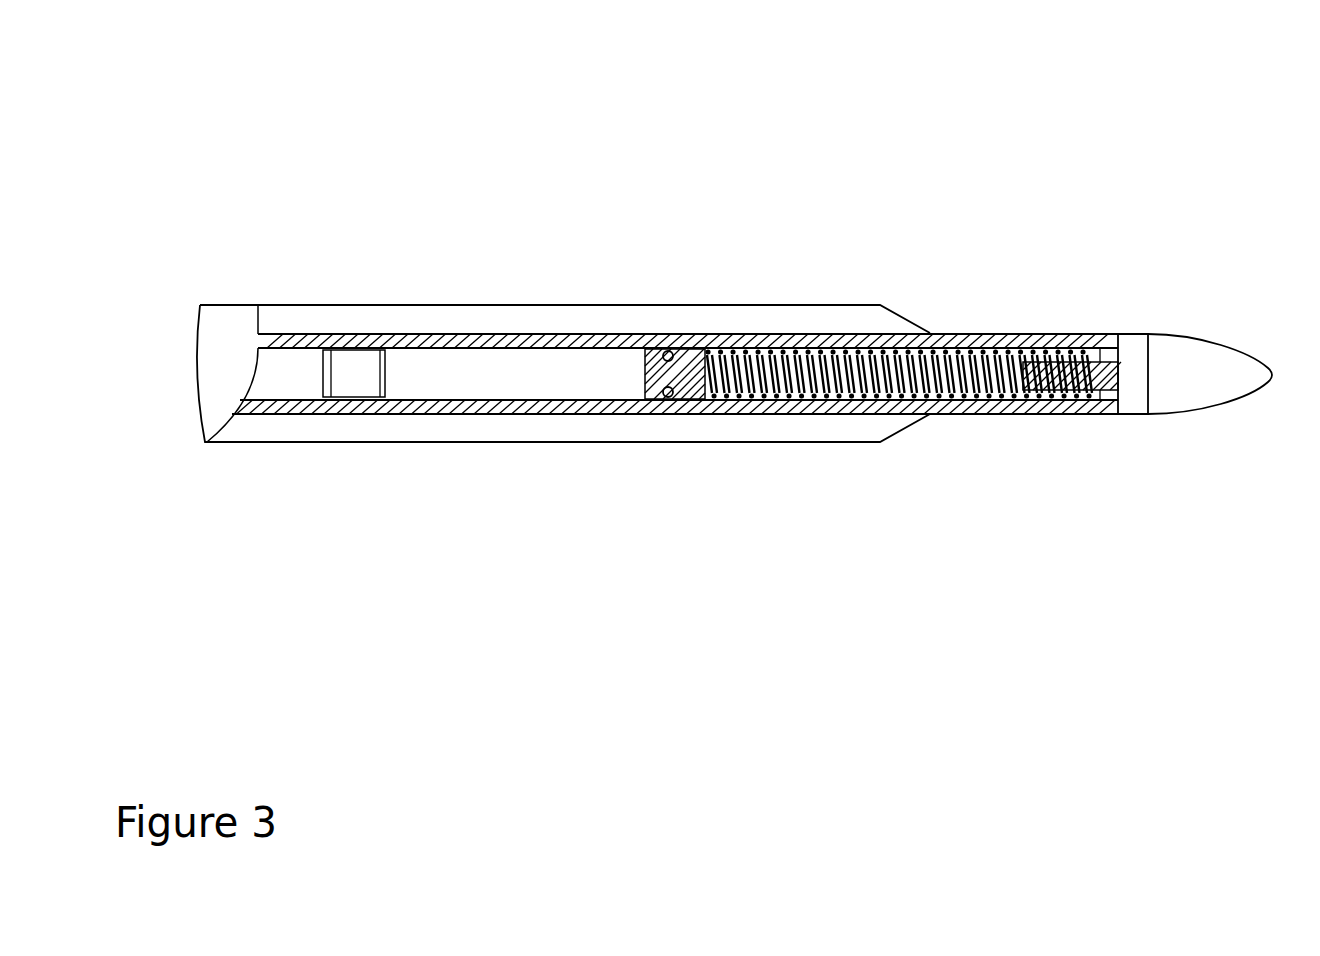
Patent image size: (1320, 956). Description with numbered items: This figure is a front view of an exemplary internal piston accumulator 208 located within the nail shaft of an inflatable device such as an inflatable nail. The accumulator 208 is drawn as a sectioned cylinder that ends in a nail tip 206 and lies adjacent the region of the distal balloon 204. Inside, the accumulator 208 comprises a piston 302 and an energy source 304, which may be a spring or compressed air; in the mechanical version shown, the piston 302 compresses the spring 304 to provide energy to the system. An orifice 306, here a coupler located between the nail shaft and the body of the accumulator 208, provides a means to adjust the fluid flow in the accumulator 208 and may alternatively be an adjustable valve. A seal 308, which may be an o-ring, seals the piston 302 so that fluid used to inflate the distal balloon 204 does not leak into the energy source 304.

The distal balloon 204 is at (500, 317).
The nail tip 206 is at (1223, 362).
The accumulator 208 is at (983, 105).
The piston 302 is at (647, 370).
The energy source 304 is at (950, 350).
The orifice 306 is at (350, 327).
The seal 308 is at (677, 350).